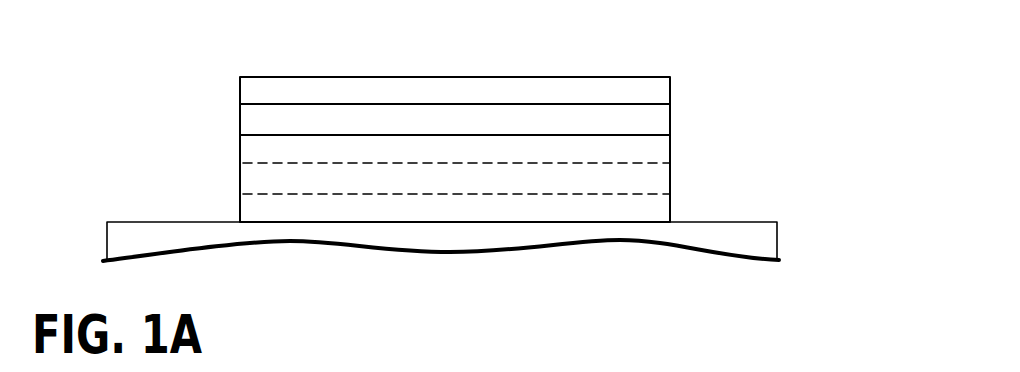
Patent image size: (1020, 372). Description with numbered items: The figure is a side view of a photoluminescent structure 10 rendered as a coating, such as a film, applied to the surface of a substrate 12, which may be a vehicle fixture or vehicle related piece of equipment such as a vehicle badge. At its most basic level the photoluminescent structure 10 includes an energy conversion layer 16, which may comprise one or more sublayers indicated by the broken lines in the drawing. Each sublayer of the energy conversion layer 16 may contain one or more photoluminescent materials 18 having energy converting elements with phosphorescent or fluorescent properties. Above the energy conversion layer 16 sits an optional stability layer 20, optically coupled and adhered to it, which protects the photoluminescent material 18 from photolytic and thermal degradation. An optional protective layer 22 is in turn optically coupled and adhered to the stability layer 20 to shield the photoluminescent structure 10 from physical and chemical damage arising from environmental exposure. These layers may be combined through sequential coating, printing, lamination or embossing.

The photoluminescent structure 10 is at (605, 51).
The substrate 12 is at (718, 222).
The energy conversion layer 16 is at (240, 175).
The photoluminescent material 18 is at (622, 181).
The stability layer 20 is at (240, 118).
The protective layer 22 is at (337, 77).